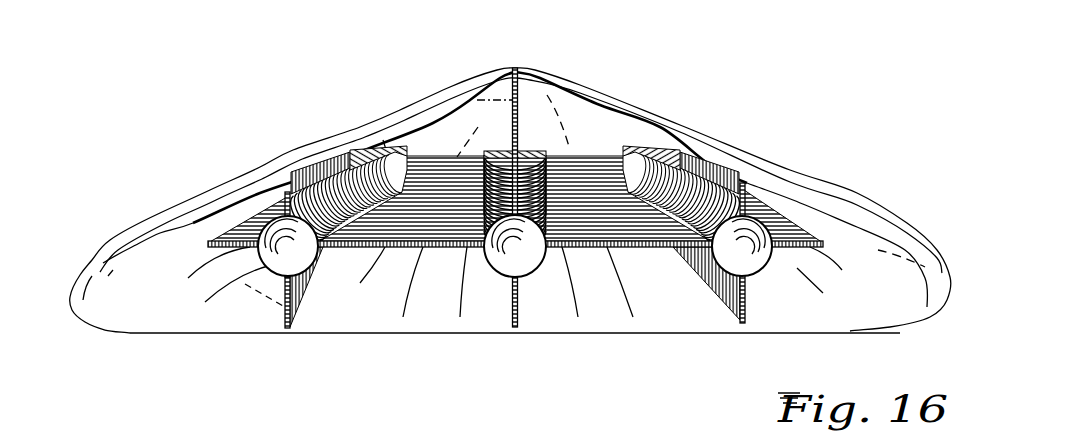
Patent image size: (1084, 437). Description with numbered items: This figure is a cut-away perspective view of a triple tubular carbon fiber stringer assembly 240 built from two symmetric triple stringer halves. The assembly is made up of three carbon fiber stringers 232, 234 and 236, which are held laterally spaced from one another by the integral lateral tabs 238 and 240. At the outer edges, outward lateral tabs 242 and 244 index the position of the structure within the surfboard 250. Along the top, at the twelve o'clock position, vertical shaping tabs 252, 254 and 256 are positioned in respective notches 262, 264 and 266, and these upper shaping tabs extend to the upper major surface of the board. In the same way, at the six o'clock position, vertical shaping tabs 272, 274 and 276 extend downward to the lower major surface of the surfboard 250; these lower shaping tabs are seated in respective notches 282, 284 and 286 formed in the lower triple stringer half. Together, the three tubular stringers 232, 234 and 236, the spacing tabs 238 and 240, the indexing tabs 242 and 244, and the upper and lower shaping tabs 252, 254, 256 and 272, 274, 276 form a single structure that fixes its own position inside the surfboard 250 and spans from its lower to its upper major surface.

The carbon fiber stringer 232 is at (313, 300).
The carbon fiber stringer 234 is at (535, 257).
The carbon fiber stringer 236 is at (755, 260).
The integral lateral tab 238 is at (448, 247).
The triple tubular carbon fiber stringer assembly 240 is at (583, 190).
The outward lateral tab 242 is at (224, 232).
The outward lateral tab 244 is at (813, 233).
The surfboard 250 is at (333, 149).
The vertical shaping tab 252 is at (317, 168).
The vertical shaping tab 254 is at (517, 145).
The vertical shaping tab 256 is at (713, 166).
The notch 262 is at (333, 204).
The notch 264 is at (515, 199).
The notch 266 is at (696, 204).
The vertical shaping tab 272 is at (290, 307).
The vertical shaping tab 274 is at (520, 320).
The vertical shaping tab 276 is at (748, 322).
The notch 282 is at (288, 246).
The notch 284 is at (515, 246).
The notch 286 is at (742, 246).